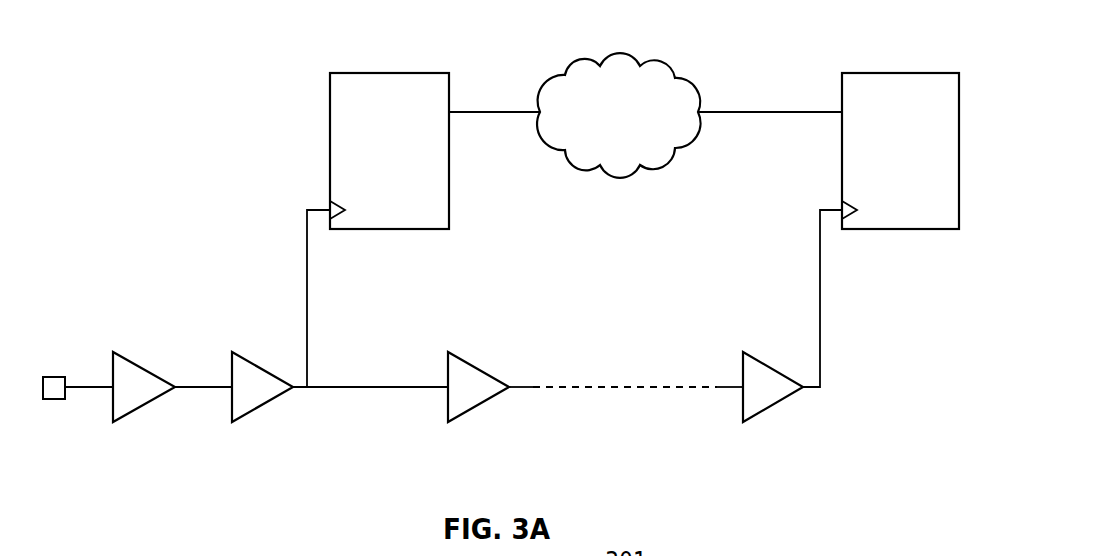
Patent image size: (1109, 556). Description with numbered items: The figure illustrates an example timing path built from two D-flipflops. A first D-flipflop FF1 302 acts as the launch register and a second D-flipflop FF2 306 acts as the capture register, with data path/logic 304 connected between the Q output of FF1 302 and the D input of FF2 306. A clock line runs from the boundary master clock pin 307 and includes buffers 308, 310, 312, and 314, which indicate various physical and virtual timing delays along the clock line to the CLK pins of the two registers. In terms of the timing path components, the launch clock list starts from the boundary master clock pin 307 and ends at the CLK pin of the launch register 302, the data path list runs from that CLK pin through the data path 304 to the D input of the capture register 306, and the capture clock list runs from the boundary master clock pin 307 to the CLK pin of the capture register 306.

The first D-flipflop FF1 302 is at (390, 72).
The data path/logic 304 is at (686, 88).
The second D-flipflop FF2 306 is at (895, 72).
The boundary master clock pin 307 is at (57, 377).
The buffer 308 is at (136, 405).
The buffer 310 is at (262, 405).
The buffer 312 is at (480, 405).
The buffer 314 is at (774, 405).